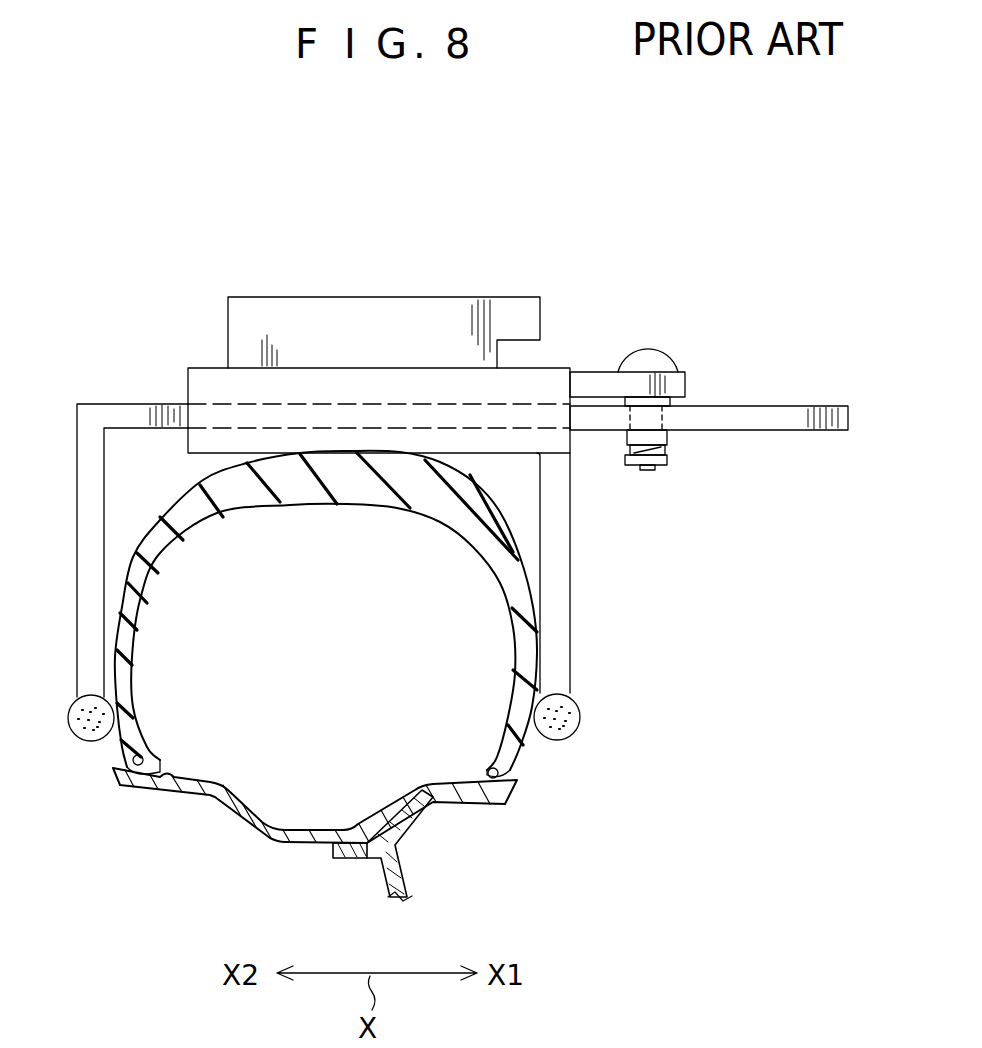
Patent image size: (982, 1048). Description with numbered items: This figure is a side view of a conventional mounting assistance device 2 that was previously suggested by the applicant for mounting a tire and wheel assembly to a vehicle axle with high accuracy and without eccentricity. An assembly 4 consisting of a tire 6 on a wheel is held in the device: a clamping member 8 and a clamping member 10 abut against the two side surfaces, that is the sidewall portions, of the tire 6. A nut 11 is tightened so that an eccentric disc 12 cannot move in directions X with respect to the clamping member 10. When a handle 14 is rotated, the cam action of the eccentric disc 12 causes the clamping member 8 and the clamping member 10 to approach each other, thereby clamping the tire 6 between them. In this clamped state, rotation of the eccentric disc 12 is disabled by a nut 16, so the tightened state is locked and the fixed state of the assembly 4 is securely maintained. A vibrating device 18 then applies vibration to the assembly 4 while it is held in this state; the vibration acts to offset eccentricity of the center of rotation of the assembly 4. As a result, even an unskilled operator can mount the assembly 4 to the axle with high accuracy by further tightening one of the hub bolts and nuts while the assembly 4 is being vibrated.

The mounting assistance device 2 is at (141, 298).
The assembly 4 is at (234, 828).
The tire 6 is at (208, 512).
The clamping member 8 is at (91, 562).
The clamping member 10 is at (563, 547).
The nut 11 is at (666, 436).
The eccentric disc 12 is at (590, 380).
The handle 14 is at (657, 364).
The nut 16 is at (665, 462).
The vibrating device 18 is at (388, 320).